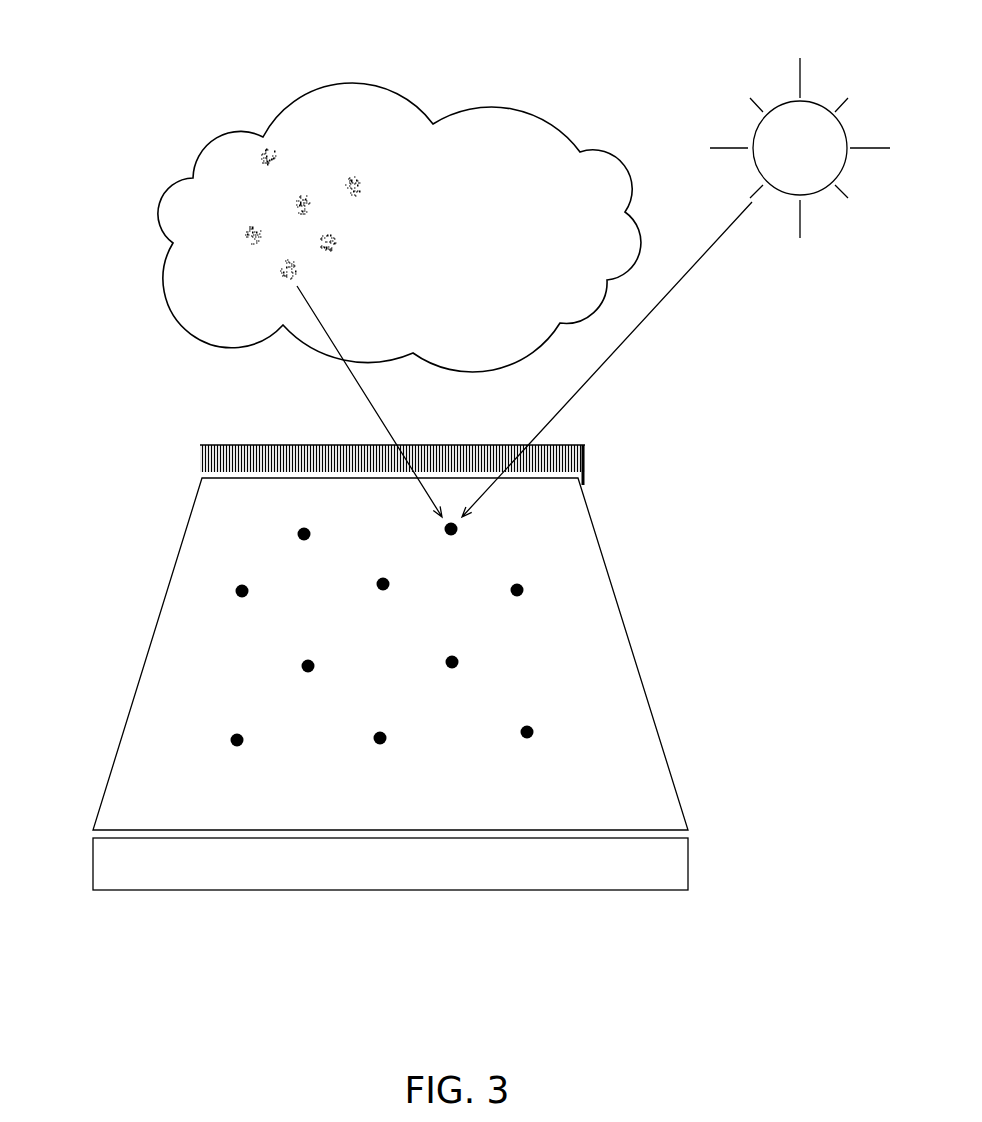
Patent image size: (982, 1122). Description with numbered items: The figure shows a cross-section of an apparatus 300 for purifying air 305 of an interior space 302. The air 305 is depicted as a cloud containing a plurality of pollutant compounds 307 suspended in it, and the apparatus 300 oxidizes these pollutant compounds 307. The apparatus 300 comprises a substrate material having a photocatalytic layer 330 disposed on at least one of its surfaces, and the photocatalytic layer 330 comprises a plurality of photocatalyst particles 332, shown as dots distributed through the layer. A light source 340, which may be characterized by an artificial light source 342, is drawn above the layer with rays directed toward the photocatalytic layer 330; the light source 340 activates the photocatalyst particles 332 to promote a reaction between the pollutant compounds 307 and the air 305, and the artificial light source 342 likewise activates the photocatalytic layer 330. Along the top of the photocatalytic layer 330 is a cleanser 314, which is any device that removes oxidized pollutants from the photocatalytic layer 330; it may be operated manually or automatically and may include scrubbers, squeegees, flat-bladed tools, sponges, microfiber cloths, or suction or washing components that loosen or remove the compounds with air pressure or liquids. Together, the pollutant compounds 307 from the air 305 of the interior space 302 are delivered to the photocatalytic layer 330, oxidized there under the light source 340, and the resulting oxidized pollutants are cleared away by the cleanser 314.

The apparatus 300 is at (350, 28).
The interior space 302 is at (405, 445).
The air 305 is at (399, 227).
The pollutant compounds 307 is at (221, 240).
The cleanser 314 is at (193, 453).
The photocatalytic layer 330 is at (390, 654).
The photocatalyst particles 332 is at (233, 733).
The light source 340 is at (676, 287).
The artificial light source 342 is at (676, 287).